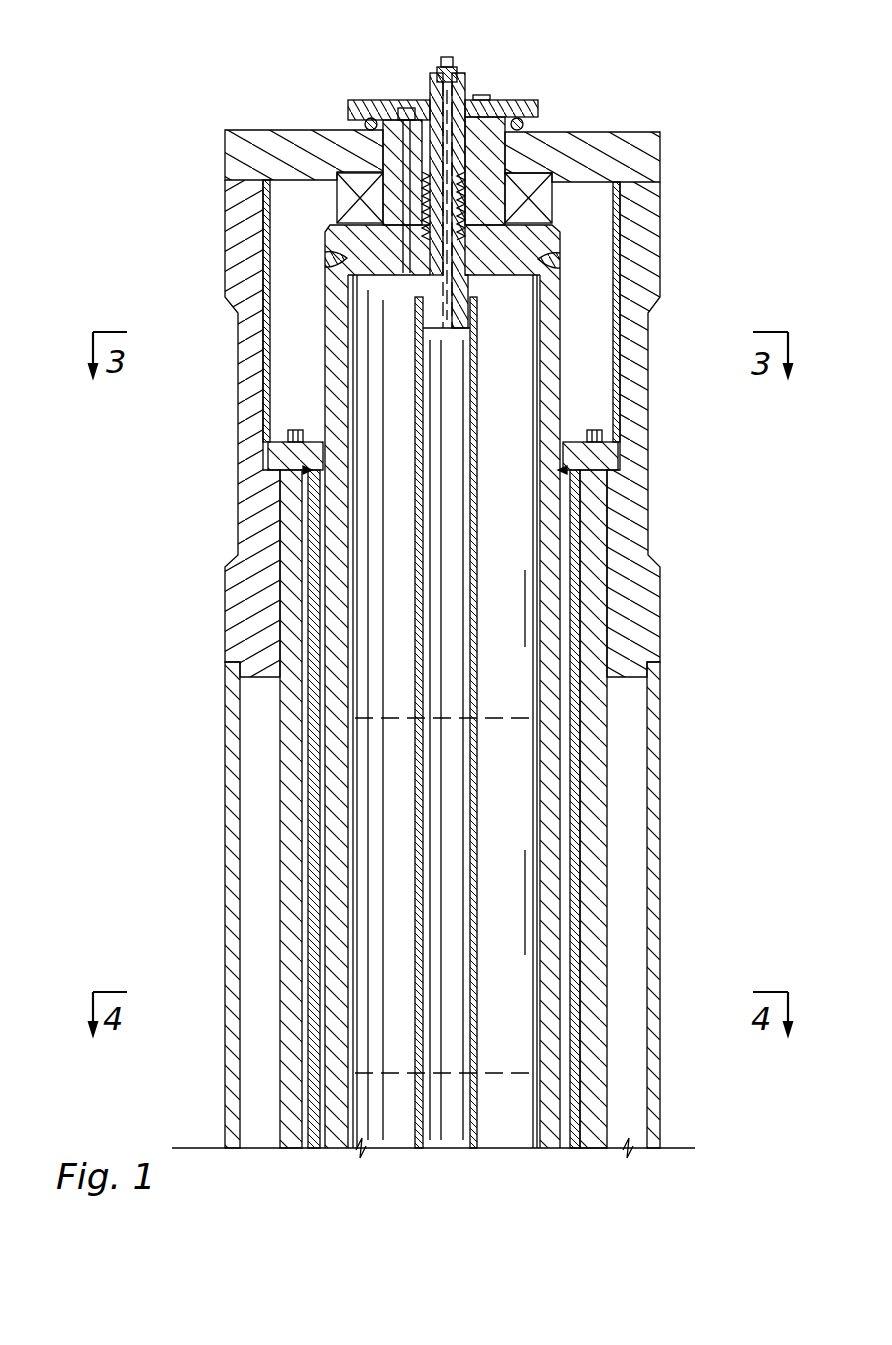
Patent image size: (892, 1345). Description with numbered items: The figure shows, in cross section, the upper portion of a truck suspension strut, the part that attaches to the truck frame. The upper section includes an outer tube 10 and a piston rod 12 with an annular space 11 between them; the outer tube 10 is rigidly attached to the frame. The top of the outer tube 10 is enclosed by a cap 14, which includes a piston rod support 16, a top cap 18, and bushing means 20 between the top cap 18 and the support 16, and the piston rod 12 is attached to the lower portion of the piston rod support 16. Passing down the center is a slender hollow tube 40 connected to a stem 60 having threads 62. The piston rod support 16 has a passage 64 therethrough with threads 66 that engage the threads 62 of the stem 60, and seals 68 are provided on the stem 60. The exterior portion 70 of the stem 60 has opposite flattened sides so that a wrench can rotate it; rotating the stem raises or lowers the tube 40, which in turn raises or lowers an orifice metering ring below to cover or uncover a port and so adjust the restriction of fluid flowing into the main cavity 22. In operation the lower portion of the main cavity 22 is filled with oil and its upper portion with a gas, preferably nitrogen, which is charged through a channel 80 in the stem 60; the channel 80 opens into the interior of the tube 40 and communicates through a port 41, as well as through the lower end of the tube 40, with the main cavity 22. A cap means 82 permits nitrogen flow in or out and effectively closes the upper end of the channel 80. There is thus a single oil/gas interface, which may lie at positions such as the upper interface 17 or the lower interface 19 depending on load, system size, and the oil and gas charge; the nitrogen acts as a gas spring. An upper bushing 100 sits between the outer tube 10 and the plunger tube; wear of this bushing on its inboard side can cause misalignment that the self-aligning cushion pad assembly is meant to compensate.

The outer tube 10 is at (665, 752).
The annular space 11 is at (597, 355).
The piston rod 12 is at (555, 812).
The cap 14 is at (637, 133).
The piston rod support 16 is at (508, 175).
The upper interface 17 is at (522, 716).
The top cap 18 is at (520, 100).
The lower interface 19 is at (522, 1070).
The bushing means 20 is at (540, 206).
The main cavity 22 is at (513, 864).
The slender hollow tube 40 is at (478, 520).
The port 41 is at (478, 378).
The stem 60 is at (458, 285).
The threads 62 is at (433, 205).
The passage 64 is at (467, 135).
The threads 66 is at (545, 158).
The seals 68 is at (420, 244).
The exterior portion 70 is at (430, 82).
The channel 80 is at (458, 102).
The cap means 82 is at (446, 57).
The upper bushing 100 is at (625, 500).